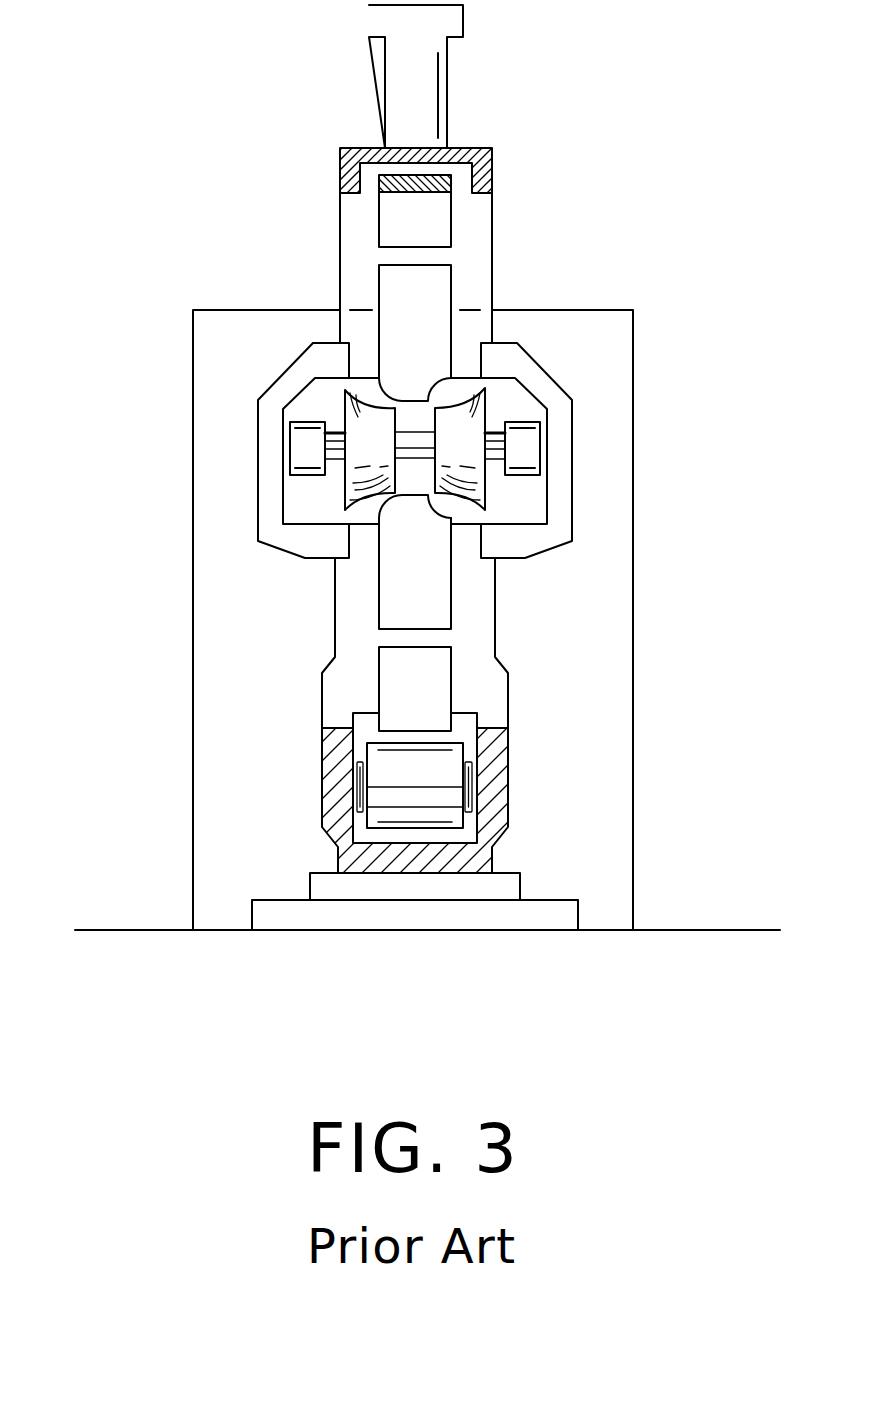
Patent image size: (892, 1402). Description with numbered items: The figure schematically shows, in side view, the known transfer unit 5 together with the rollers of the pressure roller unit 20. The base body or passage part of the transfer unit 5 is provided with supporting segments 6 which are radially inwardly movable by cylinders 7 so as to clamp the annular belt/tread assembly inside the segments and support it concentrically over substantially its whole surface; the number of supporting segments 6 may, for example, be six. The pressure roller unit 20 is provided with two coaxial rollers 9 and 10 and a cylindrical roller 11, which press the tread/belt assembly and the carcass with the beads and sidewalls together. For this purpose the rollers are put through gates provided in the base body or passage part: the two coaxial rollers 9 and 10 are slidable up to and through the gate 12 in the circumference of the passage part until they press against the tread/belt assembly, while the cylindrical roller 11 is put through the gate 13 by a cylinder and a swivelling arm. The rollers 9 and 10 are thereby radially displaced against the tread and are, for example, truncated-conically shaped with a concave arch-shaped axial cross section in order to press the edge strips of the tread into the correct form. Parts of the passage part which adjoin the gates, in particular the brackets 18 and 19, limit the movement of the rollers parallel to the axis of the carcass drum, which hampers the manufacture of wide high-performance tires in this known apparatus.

The transfer unit 5 is at (340, 180).
The supporting segments 6 is at (424, 713).
The cylinders 7 is at (427, 88).
The coaxial roller 9 is at (470, 432).
The coaxial roller 10 is at (353, 427).
The cylindrical roller 11 is at (390, 797).
The gate 12 is at (293, 505).
The gate 13 is at (365, 738).
The bracket 18 is at (280, 403).
The bracket 19 is at (543, 390).
The pressure roller unit 20 is at (433, 409).